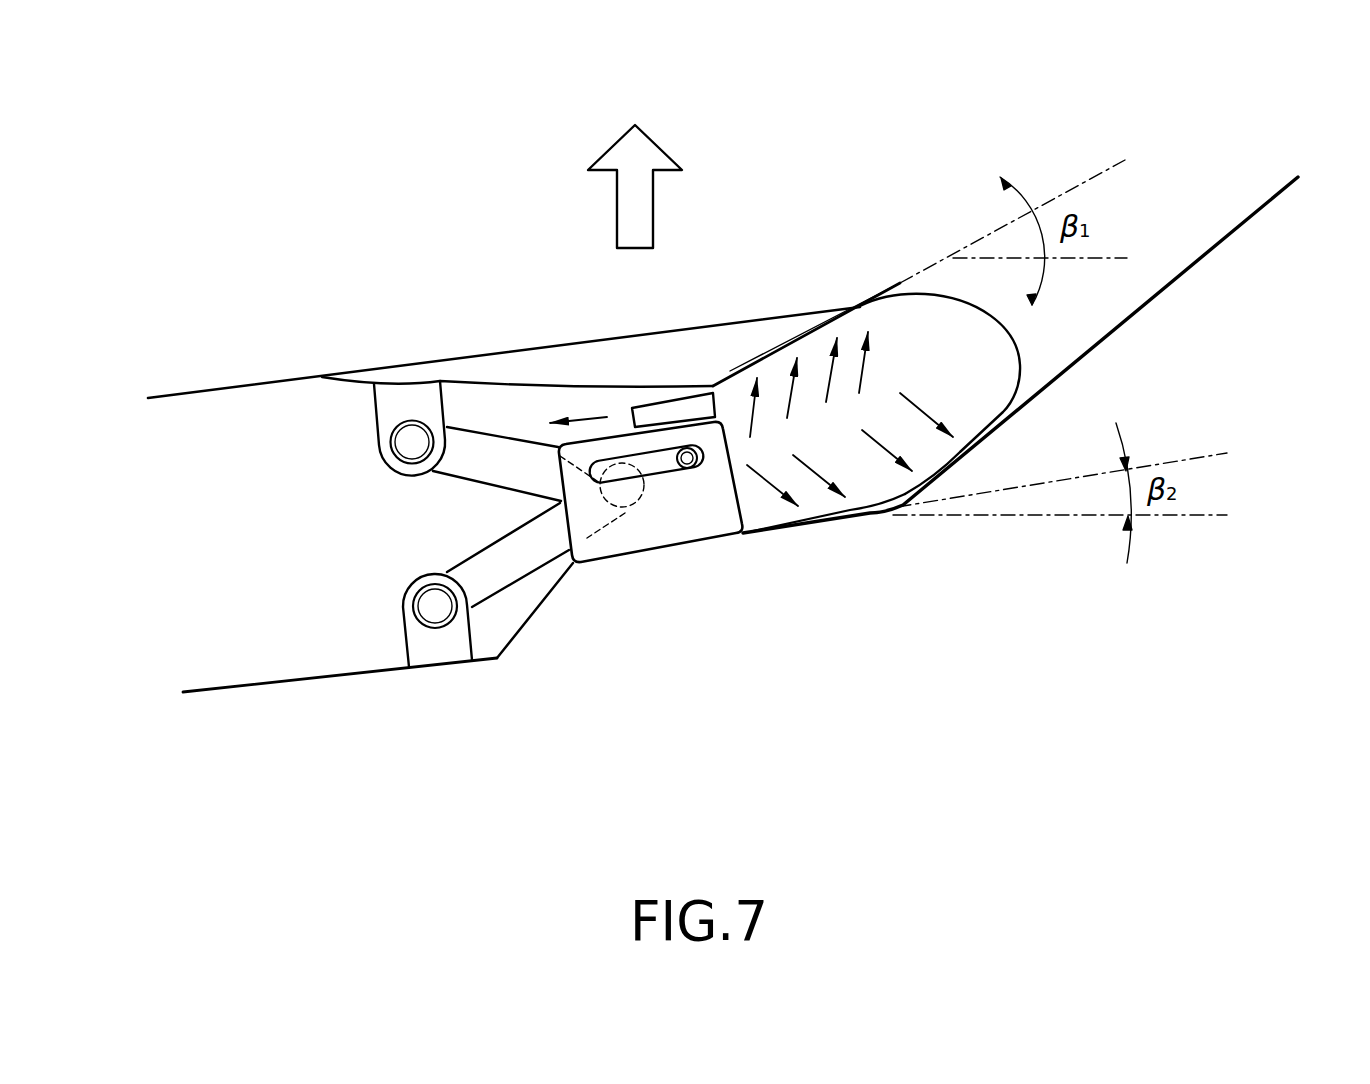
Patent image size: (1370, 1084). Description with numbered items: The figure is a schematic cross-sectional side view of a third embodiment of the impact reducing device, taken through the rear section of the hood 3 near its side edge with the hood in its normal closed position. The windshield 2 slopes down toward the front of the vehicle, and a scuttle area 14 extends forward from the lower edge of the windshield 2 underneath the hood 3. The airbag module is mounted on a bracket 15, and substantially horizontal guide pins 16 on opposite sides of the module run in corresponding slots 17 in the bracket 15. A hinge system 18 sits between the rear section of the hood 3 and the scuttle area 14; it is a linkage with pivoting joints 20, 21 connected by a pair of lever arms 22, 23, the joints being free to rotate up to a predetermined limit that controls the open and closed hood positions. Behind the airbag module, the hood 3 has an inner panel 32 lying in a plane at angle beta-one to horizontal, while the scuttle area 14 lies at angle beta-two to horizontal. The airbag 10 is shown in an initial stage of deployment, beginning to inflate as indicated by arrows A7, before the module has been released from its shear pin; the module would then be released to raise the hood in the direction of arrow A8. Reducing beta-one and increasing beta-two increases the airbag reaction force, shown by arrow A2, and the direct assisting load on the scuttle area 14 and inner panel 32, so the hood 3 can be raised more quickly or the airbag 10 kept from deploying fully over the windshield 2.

The windshield 2 is at (1227, 232).
The hood 3 is at (247, 387).
The airbag 10 is at (1002, 348).
The scuttle area 14 is at (820, 522).
The bracket 15 is at (628, 538).
The guide pins 16 is at (697, 477).
The slots 17 is at (660, 477).
The hinge system 18 is at (397, 697).
The pivoting joint 20 is at (407, 433).
The pivoting joint 21 is at (447, 608).
The lever arm 22 is at (473, 458).
The lever arm 23 is at (500, 553).
The inner panel 32 is at (790, 317).
The hood raising direction arrow A8 is at (660, 143).
The airbag reaction force arrow A2 is at (587, 417).
The airbag inflation arrows A7 is at (913, 397).